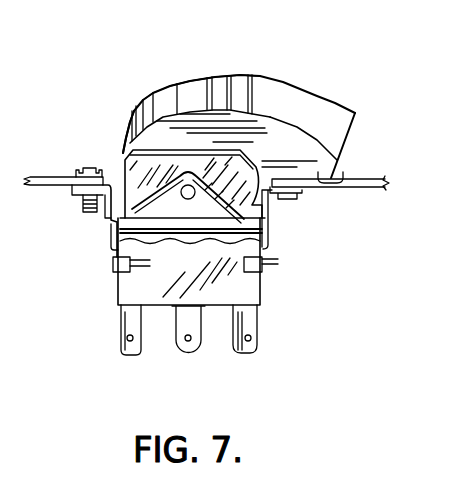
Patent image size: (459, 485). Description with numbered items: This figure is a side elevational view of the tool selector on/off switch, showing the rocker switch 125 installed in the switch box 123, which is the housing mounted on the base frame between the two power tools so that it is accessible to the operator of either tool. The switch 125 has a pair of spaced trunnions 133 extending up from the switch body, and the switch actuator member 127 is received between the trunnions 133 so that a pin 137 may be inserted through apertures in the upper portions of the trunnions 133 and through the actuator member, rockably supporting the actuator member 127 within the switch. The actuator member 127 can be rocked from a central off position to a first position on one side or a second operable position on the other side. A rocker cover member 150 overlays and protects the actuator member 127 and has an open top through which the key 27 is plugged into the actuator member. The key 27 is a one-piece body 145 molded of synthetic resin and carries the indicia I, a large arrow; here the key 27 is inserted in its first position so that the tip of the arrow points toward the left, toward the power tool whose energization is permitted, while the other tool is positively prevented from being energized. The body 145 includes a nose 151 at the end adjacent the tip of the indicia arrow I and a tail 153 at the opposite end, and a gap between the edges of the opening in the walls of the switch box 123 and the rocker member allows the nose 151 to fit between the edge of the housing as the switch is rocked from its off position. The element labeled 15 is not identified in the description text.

The indicia I is at (197, 82).
The key 27 is at (260, 112).
The rocker cover member 150 is at (117, 162).
The nose 151 is at (108, 164).
The mounting panel 15 is at (80, 168).
The body 145 is at (267, 150).
The tail 153 is at (354, 178).
The switch box 123 is at (372, 178).
The switch actuator member 127 is at (110, 218).
The trunnions 133 is at (258, 217).
The pin 137 is at (183, 197).
The rocker switch 125 is at (265, 285).